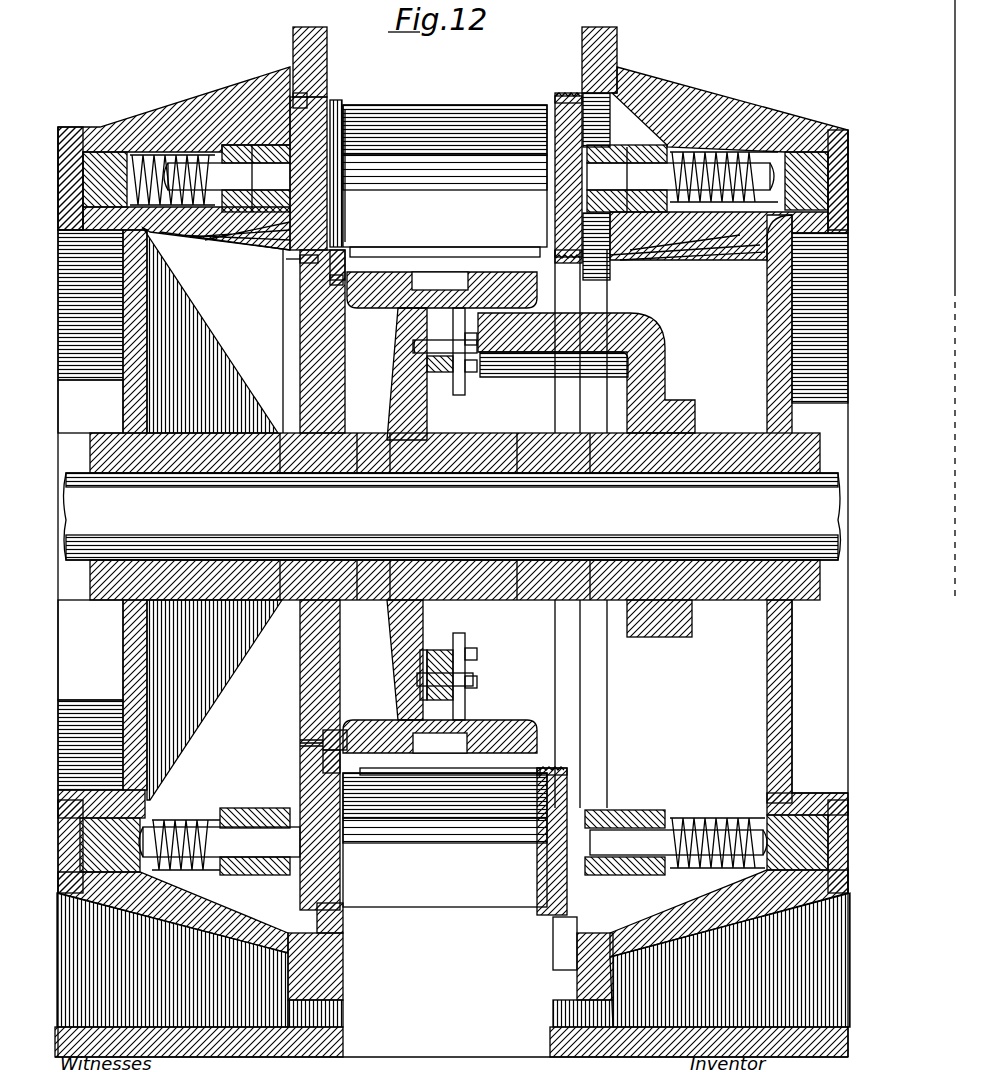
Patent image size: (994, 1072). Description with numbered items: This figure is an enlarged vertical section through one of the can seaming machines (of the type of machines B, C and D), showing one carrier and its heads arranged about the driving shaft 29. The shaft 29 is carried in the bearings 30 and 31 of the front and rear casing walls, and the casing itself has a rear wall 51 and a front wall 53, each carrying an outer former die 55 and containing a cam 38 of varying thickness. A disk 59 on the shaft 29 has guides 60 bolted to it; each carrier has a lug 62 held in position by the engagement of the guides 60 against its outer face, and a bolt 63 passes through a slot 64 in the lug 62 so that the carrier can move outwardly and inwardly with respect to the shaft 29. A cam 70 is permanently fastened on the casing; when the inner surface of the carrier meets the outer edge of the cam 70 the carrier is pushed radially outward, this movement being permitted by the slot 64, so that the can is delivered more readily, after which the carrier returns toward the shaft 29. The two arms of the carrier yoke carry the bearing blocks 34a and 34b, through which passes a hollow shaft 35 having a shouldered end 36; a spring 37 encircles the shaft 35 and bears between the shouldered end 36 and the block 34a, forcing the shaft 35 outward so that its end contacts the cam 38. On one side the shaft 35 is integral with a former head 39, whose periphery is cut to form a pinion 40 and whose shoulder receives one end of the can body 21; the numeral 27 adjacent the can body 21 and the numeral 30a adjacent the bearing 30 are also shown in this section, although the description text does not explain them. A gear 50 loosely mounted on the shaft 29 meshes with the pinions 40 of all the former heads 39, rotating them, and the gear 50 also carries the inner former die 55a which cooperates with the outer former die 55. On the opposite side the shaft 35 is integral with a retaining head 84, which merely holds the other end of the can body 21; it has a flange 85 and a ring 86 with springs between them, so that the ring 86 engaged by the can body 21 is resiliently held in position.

The can body 21 is at (445, 102).
The cylinder wall 27 is at (345, 202).
The driving shaft 29 is at (452, 516).
The bearing 30 is at (248, 440).
The conical core portion 30a is at (260, 215).
The bearing 31 is at (728, 433).
The bearing block 34a is at (660, 147).
The bearing block 34b is at (630, 145).
The hollow shaft 35 is at (255, 163).
The shouldered end 36 is at (140, 150).
The spring 37 is at (208, 163).
The cam 38 is at (100, 135).
The former head 39 is at (343, 180).
The pinion 40 is at (305, 100).
The gear 50 is at (305, 320).
The rear wall 51 is at (190, 108).
The front wall 53 is at (722, 113).
The outer former die 55 is at (343, 945).
The inner former die 55a is at (365, 262).
The disk 59 is at (427, 415).
The guide 60 is at (453, 372).
The lug 62 is at (410, 378).
The bolt 63 is at (413, 338).
The slot 64 is at (430, 650).
The cam 70 is at (525, 365).
The retaining head 84 is at (560, 110).
The flange 85 is at (570, 93).
The ring 86 is at (557, 93).